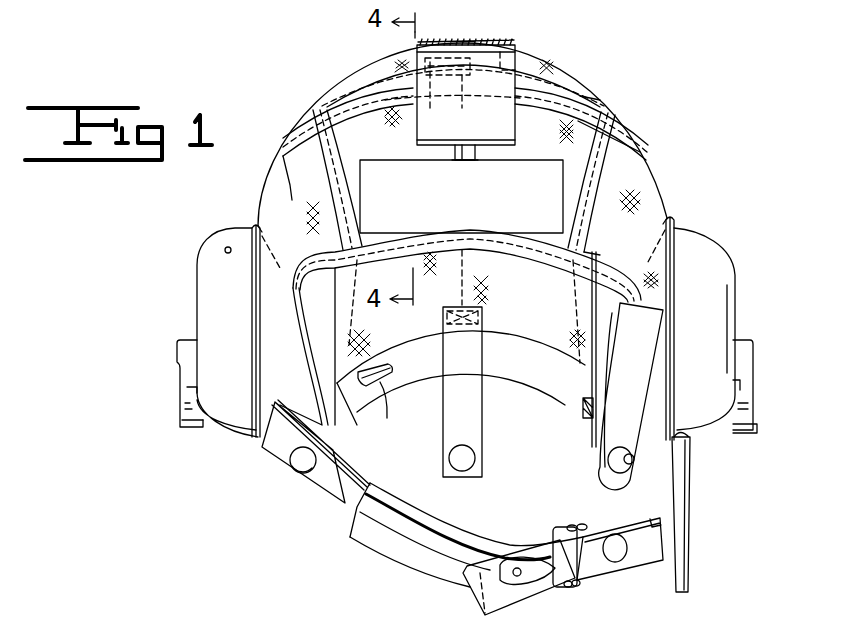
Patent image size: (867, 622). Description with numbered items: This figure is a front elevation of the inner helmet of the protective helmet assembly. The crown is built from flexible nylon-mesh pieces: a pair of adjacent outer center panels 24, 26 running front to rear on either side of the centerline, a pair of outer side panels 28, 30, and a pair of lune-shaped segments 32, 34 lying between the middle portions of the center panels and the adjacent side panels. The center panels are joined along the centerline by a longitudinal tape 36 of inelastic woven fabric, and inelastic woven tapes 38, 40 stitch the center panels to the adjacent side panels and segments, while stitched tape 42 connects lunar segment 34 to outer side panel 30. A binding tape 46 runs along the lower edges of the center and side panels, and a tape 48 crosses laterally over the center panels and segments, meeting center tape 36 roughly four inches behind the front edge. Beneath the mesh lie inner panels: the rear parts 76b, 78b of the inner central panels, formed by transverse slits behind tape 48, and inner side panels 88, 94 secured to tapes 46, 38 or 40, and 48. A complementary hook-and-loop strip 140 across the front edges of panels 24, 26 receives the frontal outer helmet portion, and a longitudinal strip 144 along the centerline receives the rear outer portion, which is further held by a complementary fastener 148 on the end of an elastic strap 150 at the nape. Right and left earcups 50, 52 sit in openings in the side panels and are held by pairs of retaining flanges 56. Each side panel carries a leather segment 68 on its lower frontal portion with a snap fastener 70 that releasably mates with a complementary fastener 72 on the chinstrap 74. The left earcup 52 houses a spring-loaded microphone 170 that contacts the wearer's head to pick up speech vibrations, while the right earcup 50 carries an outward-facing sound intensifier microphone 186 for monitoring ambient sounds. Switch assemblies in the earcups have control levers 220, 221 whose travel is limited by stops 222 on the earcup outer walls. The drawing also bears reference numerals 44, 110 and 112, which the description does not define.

The outer center panel 24 is at (382, 72).
The outer center panel 26 is at (548, 68).
The outer side panel 28 is at (283, 182).
The outer side panel 30 is at (650, 186).
The lune-shaped segment 32 is at (300, 118).
The lune-shaped segment 34 is at (612, 135).
The longitudinal tape 36 is at (462, 152).
The inelastic woven tape 38 is at (293, 125).
The inelastic woven tape 40 is at (590, 123).
The stitched tape 42 is at (292, 184).
The right strap junction 44 is at (642, 170).
The binding tape 46 is at (508, 254).
The lateral tape 48 is at (590, 97).
The right earcup 50 is at (200, 273).
The left earcup 52 is at (725, 258).
The retaining flange 56 is at (250, 228).
The segment 68 is at (270, 347).
The snap fastener 70 is at (632, 461).
The complementary fastener 72 is at (295, 487).
The chinstrap 74 is at (335, 512).
The rear part of inner central panel 76b is at (427, 335).
The rear part of inner central panel 78b is at (530, 340).
The inner side panel 88 is at (345, 368).
The inner side panel 94 is at (583, 380).
The top housing 110 is at (452, 102).
The housing cap 112 is at (512, 47).
The complementary fastener strip 140 is at (547, 248).
The complementary fastener strip 144 is at (487, 118).
The complementary snap fastener 148 is at (482, 477).
The elastic strap 150 is at (436, 446).
The spring-loaded microphone 170 is at (577, 440).
The sound intensifier microphone 186 is at (225, 248).
The control lever 220 is at (187, 428).
The control lever 221 is at (757, 432).
The stop 222 is at (187, 390).